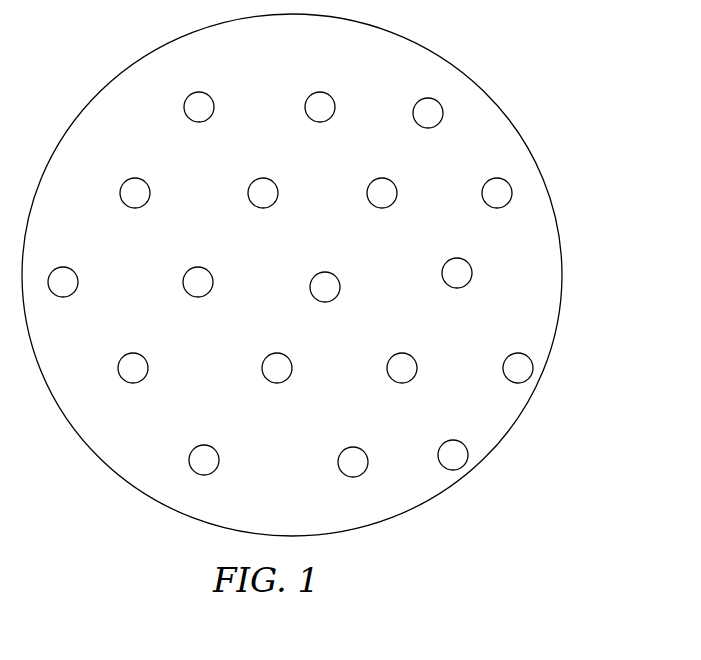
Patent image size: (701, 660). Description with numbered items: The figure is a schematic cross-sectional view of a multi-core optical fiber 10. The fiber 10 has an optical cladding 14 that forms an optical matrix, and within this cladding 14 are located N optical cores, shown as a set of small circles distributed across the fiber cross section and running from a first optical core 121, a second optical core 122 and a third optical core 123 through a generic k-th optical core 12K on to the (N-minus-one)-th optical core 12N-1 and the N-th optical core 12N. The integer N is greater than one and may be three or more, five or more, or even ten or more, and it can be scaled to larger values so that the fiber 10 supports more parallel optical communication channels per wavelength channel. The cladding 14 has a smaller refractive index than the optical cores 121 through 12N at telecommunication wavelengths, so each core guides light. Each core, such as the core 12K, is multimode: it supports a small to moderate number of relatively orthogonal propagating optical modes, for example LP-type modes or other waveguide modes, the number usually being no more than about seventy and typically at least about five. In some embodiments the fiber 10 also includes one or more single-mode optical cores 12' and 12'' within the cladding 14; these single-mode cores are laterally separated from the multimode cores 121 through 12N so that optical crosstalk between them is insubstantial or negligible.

The optical fiber 10 is at (565, 280).
The optical cladding 14 is at (271, 429).
The optical core 121 is at (208, 95).
The optical core 122 is at (330, 96).
The optical core 123 is at (436, 126).
The single-mode optical core 12' is at (88, 265).
The optical core 12K is at (207, 270).
The single-mode optical core 12'' is at (489, 263).
The optical core 12N-1 is at (353, 447).
The optical core 12N is at (453, 440).